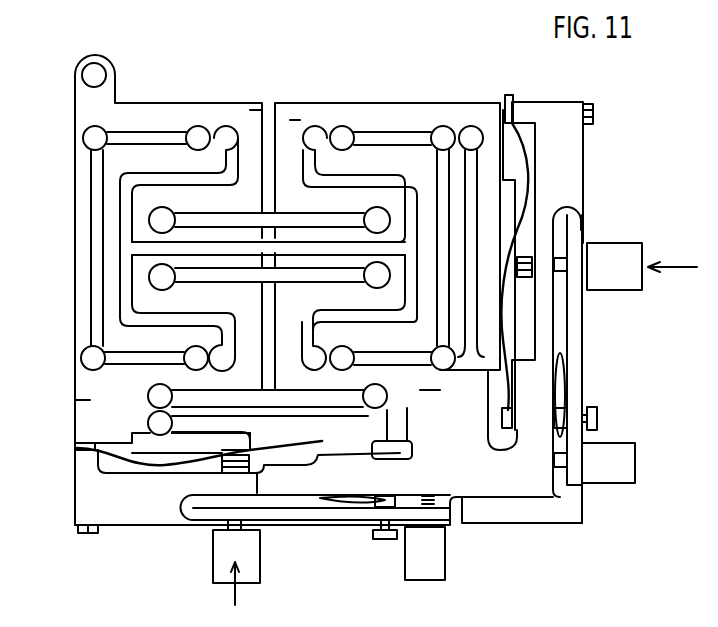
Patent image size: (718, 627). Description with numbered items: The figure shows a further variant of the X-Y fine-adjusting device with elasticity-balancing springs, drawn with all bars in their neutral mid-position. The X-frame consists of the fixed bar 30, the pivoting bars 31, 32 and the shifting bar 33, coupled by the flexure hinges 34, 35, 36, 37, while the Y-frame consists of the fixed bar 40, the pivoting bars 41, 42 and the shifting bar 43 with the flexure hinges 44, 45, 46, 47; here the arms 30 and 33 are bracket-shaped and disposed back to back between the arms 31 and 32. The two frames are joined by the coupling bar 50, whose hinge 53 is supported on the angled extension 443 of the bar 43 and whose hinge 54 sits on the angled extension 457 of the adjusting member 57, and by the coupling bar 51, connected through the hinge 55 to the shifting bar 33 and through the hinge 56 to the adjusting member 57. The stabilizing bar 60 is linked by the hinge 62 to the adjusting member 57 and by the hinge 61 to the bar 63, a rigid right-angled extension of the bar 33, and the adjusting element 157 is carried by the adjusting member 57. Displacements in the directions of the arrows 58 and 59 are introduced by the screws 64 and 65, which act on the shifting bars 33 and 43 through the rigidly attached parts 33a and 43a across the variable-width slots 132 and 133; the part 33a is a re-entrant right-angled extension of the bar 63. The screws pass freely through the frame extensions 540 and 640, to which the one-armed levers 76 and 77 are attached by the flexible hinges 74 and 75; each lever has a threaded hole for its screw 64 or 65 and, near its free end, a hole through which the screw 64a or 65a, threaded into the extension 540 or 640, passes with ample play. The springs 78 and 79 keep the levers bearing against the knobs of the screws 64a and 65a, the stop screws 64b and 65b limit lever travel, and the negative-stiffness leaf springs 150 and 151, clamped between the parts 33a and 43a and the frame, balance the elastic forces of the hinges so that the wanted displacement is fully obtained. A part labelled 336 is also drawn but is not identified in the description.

The adjusting element 157 is at (104, 61).
The adjusting member 57 is at (143, 110).
The flexible hinge 62 is at (210, 126).
The angled extension 457 is at (248, 116).
The angled extension 443 is at (293, 122).
The flexure hinge 47 is at (333, 126).
The flexure hinge 53 is at (378, 207).
The shifting bar 43 is at (413, 113).
The flexure hinge 46 is at (456, 128).
The second variable width slot 133 is at (509, 95).
The part rigidly connected to shifting bar 43a is at (528, 140).
The extension of the fixed frame 640 is at (575, 190).
The flexure hinge 56 is at (82, 140).
The flexure hinge 54 is at (160, 233).
The coupling bar 51 is at (80, 218).
The stabilizing bar 60 is at (132, 258).
The flexure hinge 36 is at (157, 264).
The flexible hinge 61 is at (208, 358).
The flexure hinge 55 is at (81, 357).
The bar 63 is at (137, 373).
The plate portion 336 is at (93, 400).
The flexure hinge 37 is at (148, 416).
The first variable width slot 132 is at (77, 438).
The extension of the fixed frame 540 is at (83, 492).
The leaf spring 150 is at (122, 462).
The part rigidly connected to shifting bar 33a is at (187, 447).
The flexible hinge 74 is at (193, 520).
The screw 64 is at (250, 553).
The arrow 58 is at (243, 590).
The one-armed lever 76 is at (308, 520).
The spring 78 is at (335, 504).
The stop screw 64b is at (383, 542).
The screw 64a is at (432, 562).
The coupling bar 50 is at (291, 240).
The pivoting bar 31 is at (293, 270).
The flexure hinge 34 is at (369, 278).
The shifting bar 33 is at (249, 345).
The fixed bar 30 is at (289, 345).
The flexure hinge 45 is at (327, 359).
The pivoting bar 32 is at (250, 406).
The flexure hinge 35 is at (385, 411).
The fixed bar 40 is at (418, 384).
The flexure hinge 44 is at (452, 366).
The pivoting bar 41 is at (457, 200).
The pivoting bar 42 is at (442, 236).
The flexible hinge 75 is at (582, 224).
The arrow 59 is at (672, 254).
The screw 65 is at (625, 282).
The leaf spring 151 is at (500, 322).
The one-armed lever 77 is at (573, 338).
The spring 79 is at (565, 374).
The stop screw 65b is at (597, 414).
The screw 65a is at (612, 483).